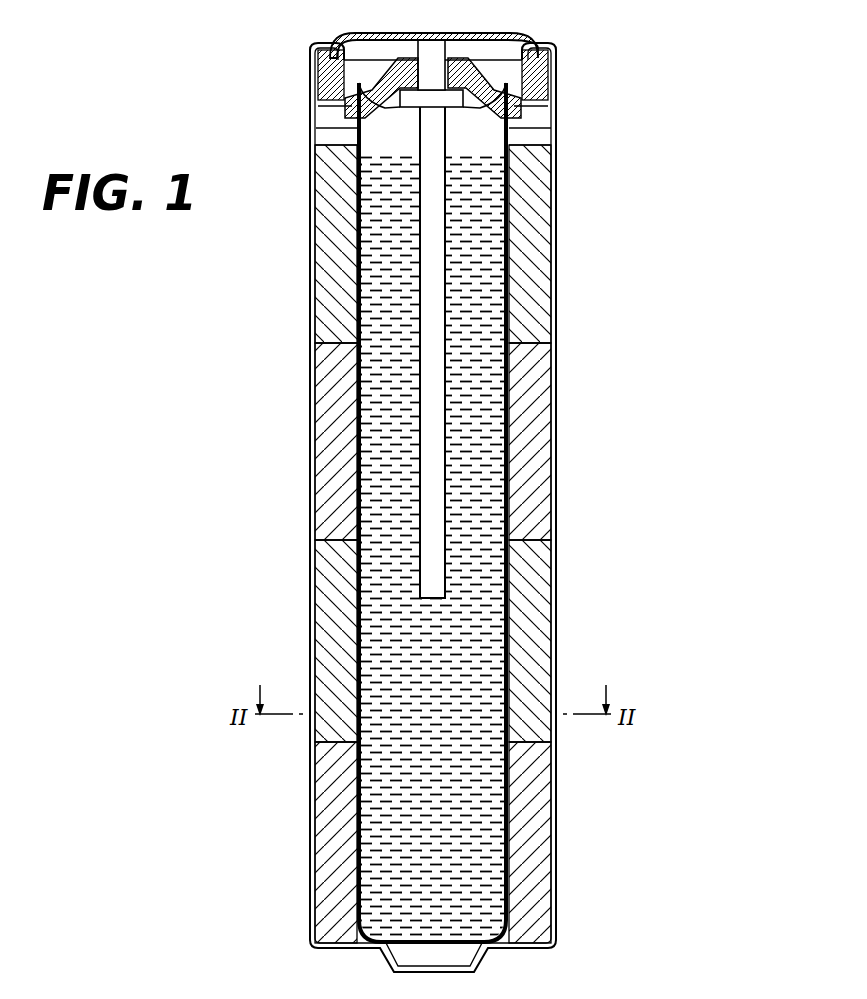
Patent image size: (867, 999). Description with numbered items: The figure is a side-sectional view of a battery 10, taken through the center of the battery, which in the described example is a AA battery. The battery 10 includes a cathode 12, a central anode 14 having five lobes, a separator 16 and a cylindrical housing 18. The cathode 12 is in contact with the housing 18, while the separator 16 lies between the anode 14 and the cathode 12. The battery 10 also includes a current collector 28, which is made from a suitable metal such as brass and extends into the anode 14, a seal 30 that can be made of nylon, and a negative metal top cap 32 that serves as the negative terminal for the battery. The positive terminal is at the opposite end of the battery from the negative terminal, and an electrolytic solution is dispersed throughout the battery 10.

The battery 10 is at (657, 101).
The cathode 12 is at (545, 222).
The anode 14 is at (482, 622).
The separator 16 is at (358, 483).
The cylindrical housing 18 is at (312, 313).
The current collector 28 is at (434, 440).
The seal 30 is at (345, 110).
The negative metal top cap 32 is at (515, 35).